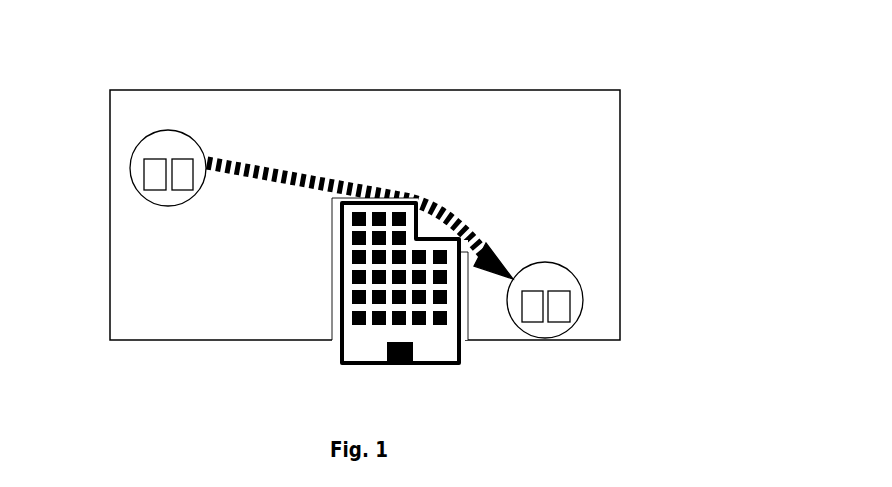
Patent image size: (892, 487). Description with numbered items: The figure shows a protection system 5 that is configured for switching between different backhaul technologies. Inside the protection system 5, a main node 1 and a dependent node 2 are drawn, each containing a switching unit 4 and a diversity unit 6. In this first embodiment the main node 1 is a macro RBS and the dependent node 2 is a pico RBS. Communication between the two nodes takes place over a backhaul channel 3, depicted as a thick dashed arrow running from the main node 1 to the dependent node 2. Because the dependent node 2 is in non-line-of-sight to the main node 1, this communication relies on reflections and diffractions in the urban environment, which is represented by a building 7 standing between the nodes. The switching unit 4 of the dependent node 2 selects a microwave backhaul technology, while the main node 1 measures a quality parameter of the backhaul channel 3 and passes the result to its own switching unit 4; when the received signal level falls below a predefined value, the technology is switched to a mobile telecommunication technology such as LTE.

The main node 1 is at (189, 127).
The dependent node 2 is at (600, 258).
The backhaul channel 3 is at (340, 182).
The switching unit 4 is at (159, 185).
The protection system 5 is at (622, 50).
The diversity unit 6 is at (182, 185).
The building 7 is at (353, 355).